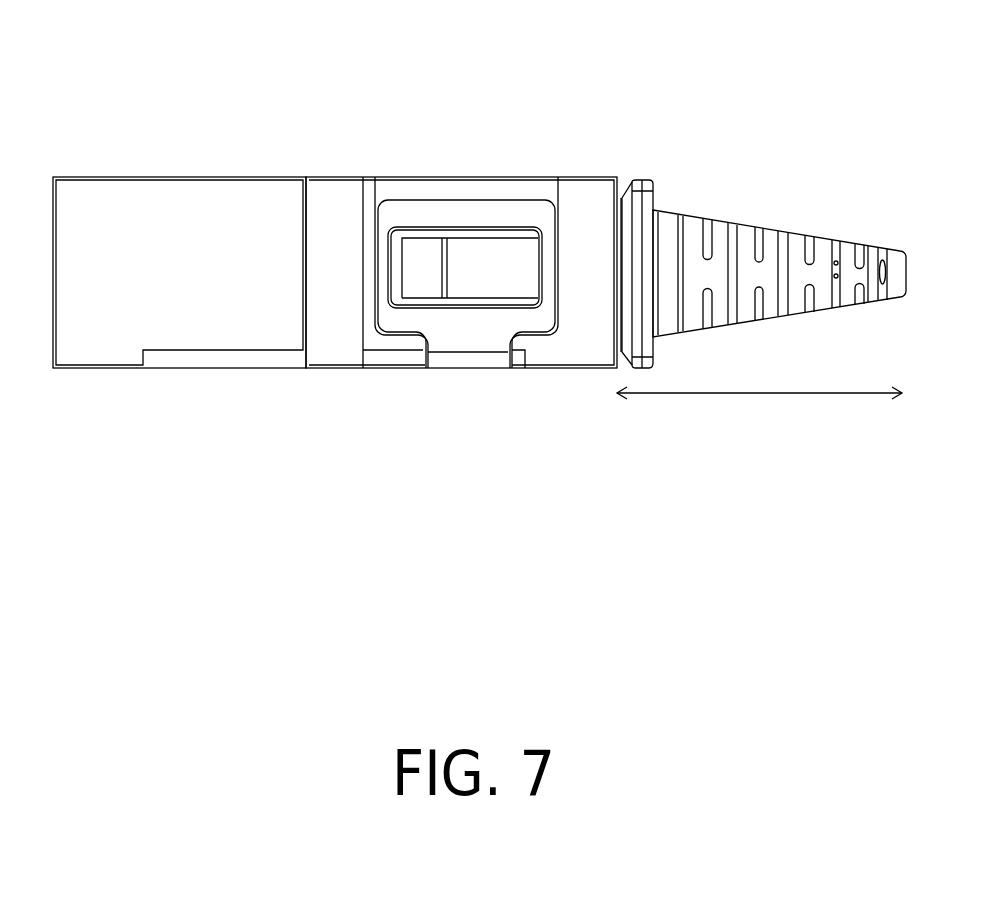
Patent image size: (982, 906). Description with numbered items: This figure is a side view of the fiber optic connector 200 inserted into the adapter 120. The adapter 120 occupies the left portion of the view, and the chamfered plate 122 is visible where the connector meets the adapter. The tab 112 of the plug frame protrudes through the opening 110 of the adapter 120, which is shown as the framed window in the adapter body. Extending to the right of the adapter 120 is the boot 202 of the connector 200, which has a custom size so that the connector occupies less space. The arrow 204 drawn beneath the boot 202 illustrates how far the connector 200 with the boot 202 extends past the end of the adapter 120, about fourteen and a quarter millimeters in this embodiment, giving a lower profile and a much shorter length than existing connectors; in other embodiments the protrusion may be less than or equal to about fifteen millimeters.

The opening 110 is at (465, 330).
The tab 112 is at (485, 232).
The adapter 120 is at (247, 213).
The chamfered plate 122 is at (638, 185).
The fiber optic connector 200 is at (810, 228).
The boot 202 is at (767, 255).
The arrow 204 is at (733, 393).